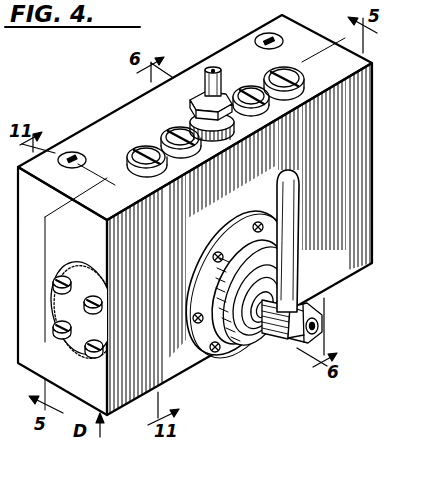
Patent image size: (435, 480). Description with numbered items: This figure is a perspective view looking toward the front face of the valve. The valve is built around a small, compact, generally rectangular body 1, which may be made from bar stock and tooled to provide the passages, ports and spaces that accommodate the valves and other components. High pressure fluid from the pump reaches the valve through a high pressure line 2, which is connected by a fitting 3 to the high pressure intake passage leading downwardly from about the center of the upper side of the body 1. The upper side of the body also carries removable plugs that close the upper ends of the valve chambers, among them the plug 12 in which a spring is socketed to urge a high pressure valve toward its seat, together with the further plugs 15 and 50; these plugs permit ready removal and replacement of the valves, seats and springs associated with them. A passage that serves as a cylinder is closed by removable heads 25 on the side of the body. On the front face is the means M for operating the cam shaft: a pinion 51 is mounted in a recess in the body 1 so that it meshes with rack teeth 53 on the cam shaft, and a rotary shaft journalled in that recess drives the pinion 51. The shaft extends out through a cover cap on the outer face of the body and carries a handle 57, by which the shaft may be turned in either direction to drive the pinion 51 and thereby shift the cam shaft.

The body 1 is at (100, 122).
The high pressure line 2 is at (213, 66).
The fitting 3 is at (190, 116).
The spring 12 is at (175, 131).
The plug screw 50 is at (136, 149).
The plug screw 15 is at (247, 89).
The pinion 51 is at (296, 61).
The removable heads 25 is at (78, 278).
The rack teeth 53 is at (200, 345).
The handle 57 is at (280, 188).
The means for operating the cam shaft M is at (322, 328).